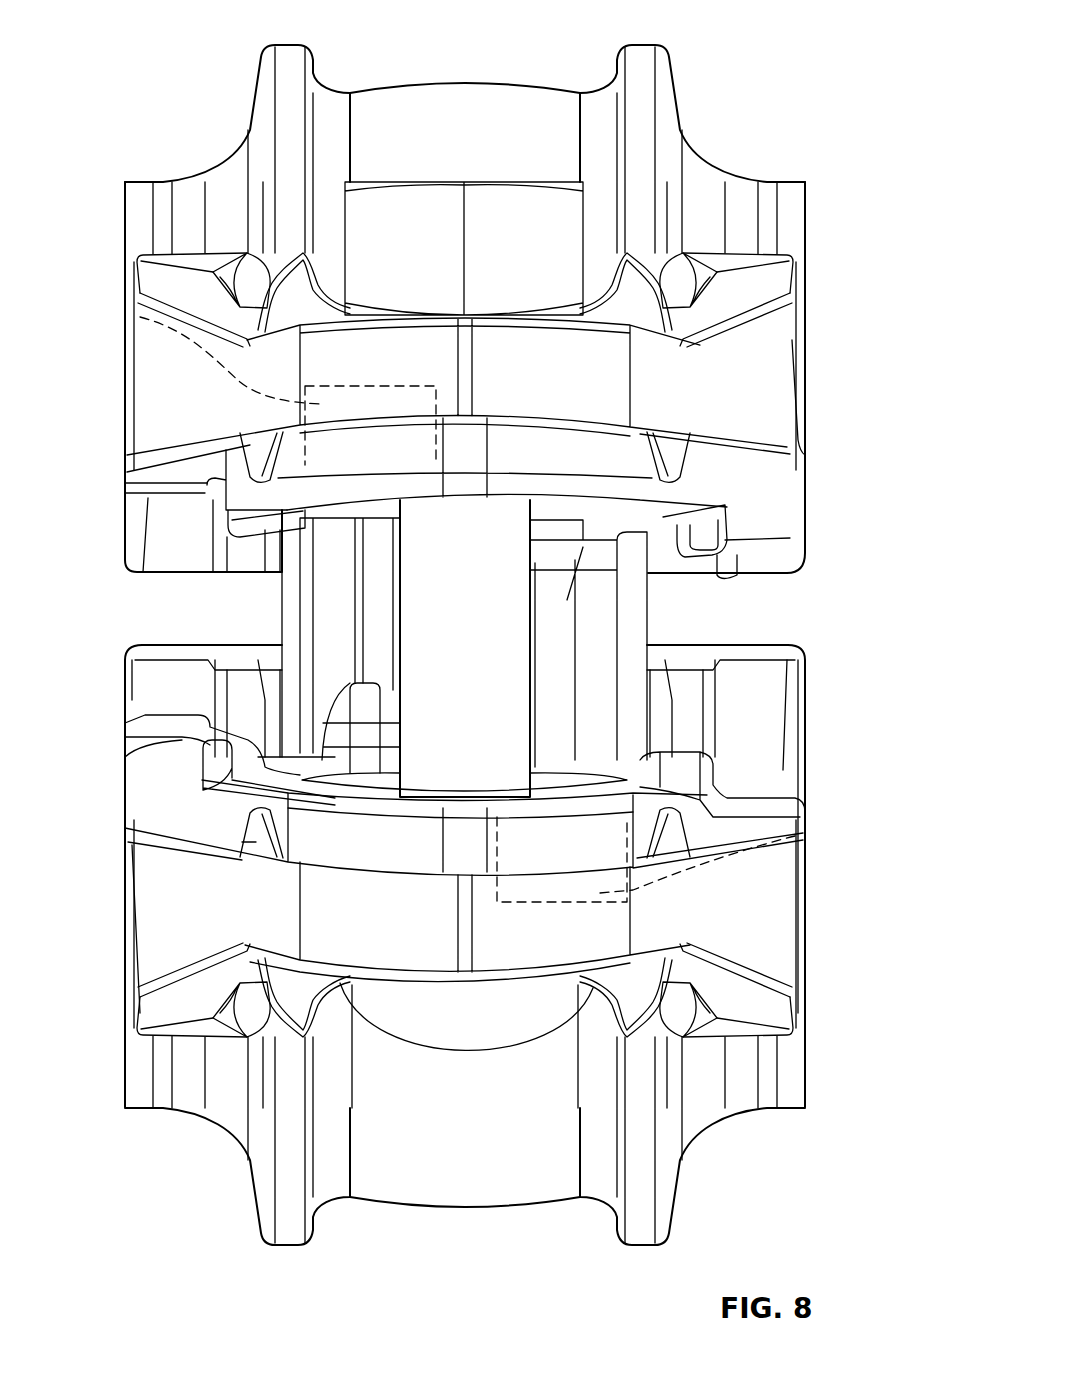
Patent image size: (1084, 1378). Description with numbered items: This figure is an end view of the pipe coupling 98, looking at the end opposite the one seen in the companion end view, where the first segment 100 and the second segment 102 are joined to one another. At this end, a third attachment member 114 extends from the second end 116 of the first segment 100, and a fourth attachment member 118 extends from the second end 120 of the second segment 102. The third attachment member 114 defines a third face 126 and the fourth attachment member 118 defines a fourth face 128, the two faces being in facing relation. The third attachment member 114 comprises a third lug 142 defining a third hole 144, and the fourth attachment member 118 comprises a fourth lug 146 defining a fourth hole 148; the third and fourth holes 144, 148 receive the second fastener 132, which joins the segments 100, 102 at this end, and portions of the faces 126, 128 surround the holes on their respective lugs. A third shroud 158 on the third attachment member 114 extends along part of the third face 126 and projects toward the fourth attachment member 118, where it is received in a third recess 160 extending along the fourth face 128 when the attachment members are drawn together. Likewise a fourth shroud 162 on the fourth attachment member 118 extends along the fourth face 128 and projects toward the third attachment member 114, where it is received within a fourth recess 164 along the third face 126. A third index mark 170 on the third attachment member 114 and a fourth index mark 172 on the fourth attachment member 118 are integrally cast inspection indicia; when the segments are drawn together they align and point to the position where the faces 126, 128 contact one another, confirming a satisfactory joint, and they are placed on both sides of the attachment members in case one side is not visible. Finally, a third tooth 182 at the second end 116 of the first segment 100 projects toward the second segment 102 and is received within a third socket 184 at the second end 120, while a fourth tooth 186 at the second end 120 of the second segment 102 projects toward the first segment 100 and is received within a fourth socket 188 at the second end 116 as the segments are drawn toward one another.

The coupling 98 is at (800, 33).
The first segment 100 is at (510, 1190).
The second segment 102 is at (501, 86).
The third attachment member 114 is at (483, 876).
The second end of the first segment 116 is at (125, 788).
The fourth attachment member 118 is at (496, 474).
The second end of the second segment 120 is at (125, 473).
The third face 126 is at (540, 793).
The fourth face 128 is at (727, 507).
The second fastener 132 is at (487, 617).
The third lug 142 is at (647, 930).
The third hole 144 is at (548, 778).
The fourth lug 146 is at (723, 470).
The fourth hole 148 is at (548, 500).
The third shroud 158 is at (180, 738).
The third recess 160 is at (200, 487).
The fourth shroud 162 is at (757, 557).
The fourth recess 164 is at (750, 777).
The third index mark 170 is at (258, 842).
The fourth index mark 172 is at (258, 448).
The third tooth 182 is at (380, 705).
The third socket 184 is at (140, 317).
The fourth tooth 186 is at (557, 570).
The fourth socket 188 is at (795, 836).